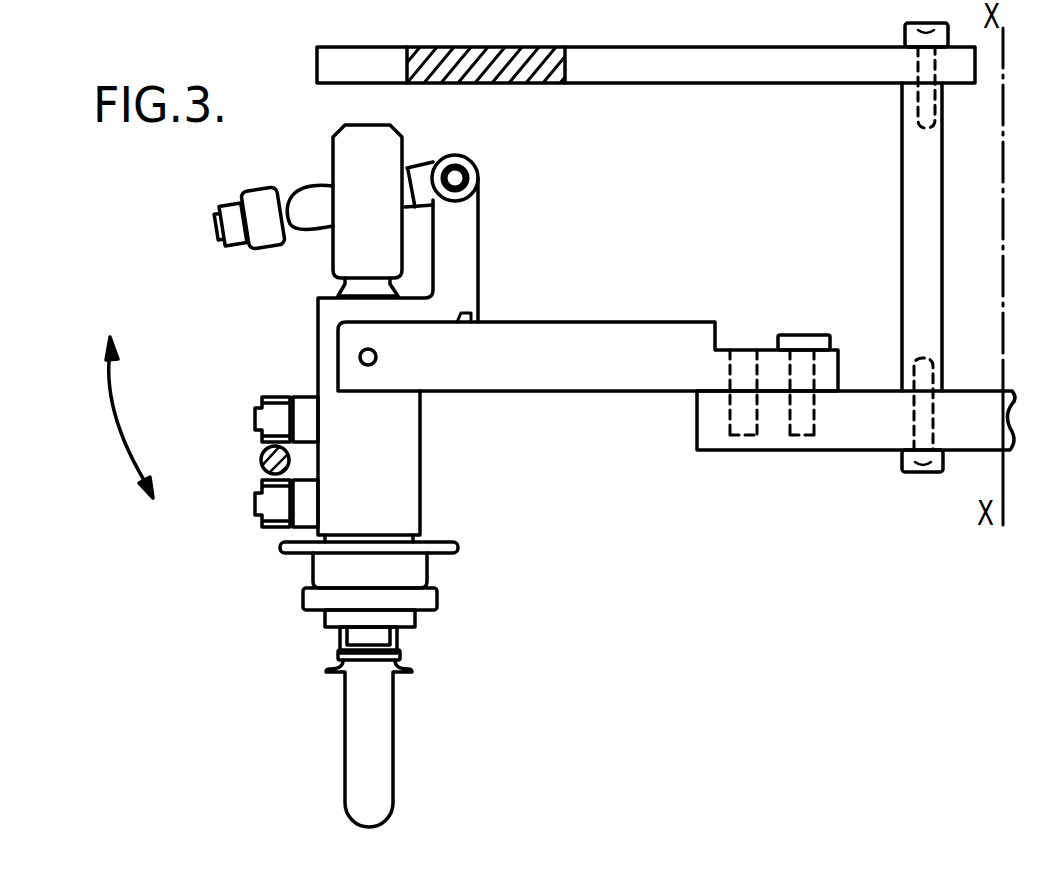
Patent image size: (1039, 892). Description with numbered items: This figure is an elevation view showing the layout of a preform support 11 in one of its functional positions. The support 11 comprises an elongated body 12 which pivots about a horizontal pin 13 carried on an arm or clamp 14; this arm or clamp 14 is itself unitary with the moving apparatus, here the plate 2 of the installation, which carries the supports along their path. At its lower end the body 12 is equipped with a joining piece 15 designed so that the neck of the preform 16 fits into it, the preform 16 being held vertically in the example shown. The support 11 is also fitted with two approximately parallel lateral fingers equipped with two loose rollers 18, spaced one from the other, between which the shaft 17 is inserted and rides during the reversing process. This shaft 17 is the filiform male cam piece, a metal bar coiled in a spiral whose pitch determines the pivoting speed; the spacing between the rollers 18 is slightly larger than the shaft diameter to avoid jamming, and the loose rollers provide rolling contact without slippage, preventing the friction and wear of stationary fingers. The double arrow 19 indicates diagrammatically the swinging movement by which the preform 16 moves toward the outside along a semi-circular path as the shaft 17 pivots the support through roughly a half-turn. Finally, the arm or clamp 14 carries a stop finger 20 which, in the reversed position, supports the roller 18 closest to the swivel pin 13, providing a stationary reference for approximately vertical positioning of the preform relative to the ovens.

The plate 2 is at (860, 420).
The preform support 11 is at (421, 513).
The body 12 is at (397, 437).
The horizontal pin 13 is at (375, 362).
The arm or clamp 14 is at (545, 330).
The joining piece 15 is at (370, 638).
The preform 16 is at (393, 720).
The shaft 17 is at (261, 459).
The loose rollers 18 is at (271, 415).
The double arrow 19 is at (113, 412).
The stop finger 20 is at (483, 295).